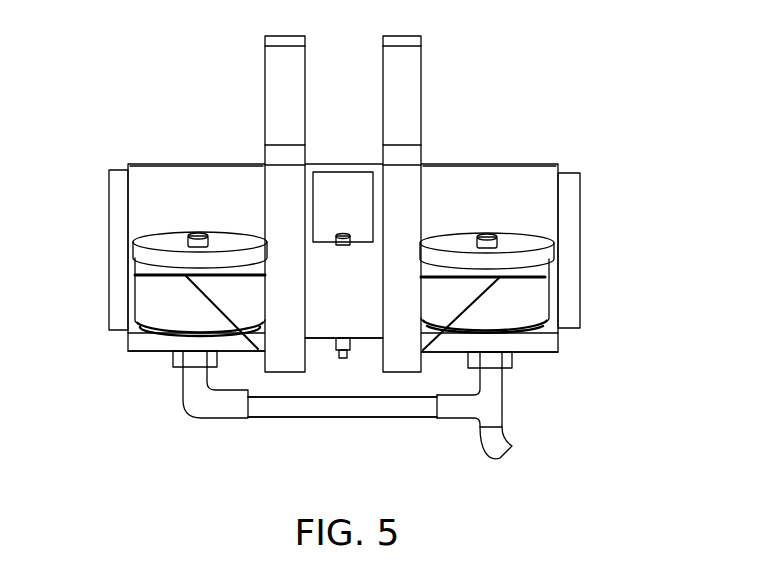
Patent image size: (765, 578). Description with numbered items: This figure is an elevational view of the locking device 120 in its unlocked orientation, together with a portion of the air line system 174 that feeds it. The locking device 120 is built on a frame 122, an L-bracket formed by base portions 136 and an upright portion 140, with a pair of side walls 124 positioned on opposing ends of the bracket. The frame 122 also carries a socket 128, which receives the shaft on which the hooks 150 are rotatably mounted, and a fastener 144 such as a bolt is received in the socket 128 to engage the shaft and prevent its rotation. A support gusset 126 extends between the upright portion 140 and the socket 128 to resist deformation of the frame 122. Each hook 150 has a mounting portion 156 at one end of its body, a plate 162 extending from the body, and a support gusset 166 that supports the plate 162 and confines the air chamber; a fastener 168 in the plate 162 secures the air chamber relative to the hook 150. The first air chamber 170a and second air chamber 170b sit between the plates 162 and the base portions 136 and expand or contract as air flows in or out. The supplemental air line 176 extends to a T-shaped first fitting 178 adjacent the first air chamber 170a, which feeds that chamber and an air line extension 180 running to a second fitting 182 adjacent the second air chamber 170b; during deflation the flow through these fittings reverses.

The locking device 120 is at (478, 78).
The frame 122 is at (537, 177).
The side walls 124 is at (117, 265).
The support gusset 126 is at (332, 180).
The socket 128 is at (310, 345).
The base portions 136 is at (137, 340).
The upright portion 140 is at (153, 173).
The fastener 144 is at (343, 232).
The hooks 150 is at (273, 87).
The mounting portion 156 is at (314, 326).
The plate 162 is at (225, 242).
The support gusset 166 is at (235, 307).
The fastener 168 is at (198, 233).
The first air chamber 170a is at (543, 297).
The second air chamber 170b is at (150, 303).
The air line system 174 is at (396, 440).
The supplemental air line 176 is at (510, 449).
The first fitting 178 is at (492, 407).
The air line extension 180 is at (263, 405).
The second fitting 182 is at (206, 407).